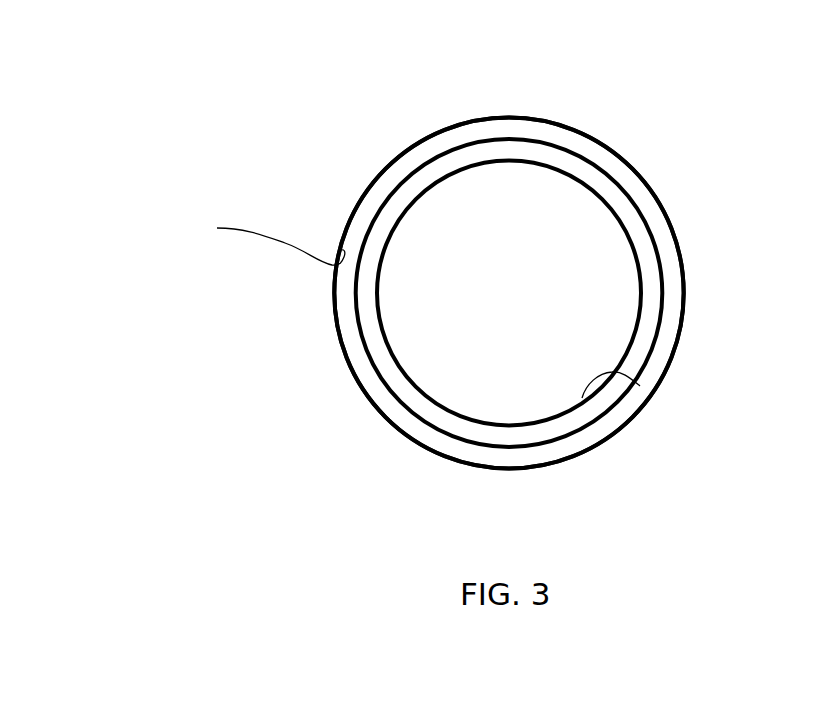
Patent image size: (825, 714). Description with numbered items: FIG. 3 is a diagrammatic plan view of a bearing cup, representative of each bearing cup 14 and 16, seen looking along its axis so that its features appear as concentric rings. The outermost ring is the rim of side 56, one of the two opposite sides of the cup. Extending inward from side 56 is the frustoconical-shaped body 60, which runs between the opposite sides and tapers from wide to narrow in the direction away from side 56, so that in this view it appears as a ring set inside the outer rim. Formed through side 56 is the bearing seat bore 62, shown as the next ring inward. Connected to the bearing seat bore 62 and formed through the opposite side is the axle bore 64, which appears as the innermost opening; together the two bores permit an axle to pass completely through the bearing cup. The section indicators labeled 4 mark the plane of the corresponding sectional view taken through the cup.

The section line 4- 4 is at (509, 98).
The bearing cup 14 is at (630, 165).
The bearing cup 16 is at (508, 293).
The side 56 is at (672, 298).
The frustoconical-shaped body 60 is at (264, 237).
The bearing seat bore 62 is at (370, 363).
The axle bore 64 is at (620, 372).